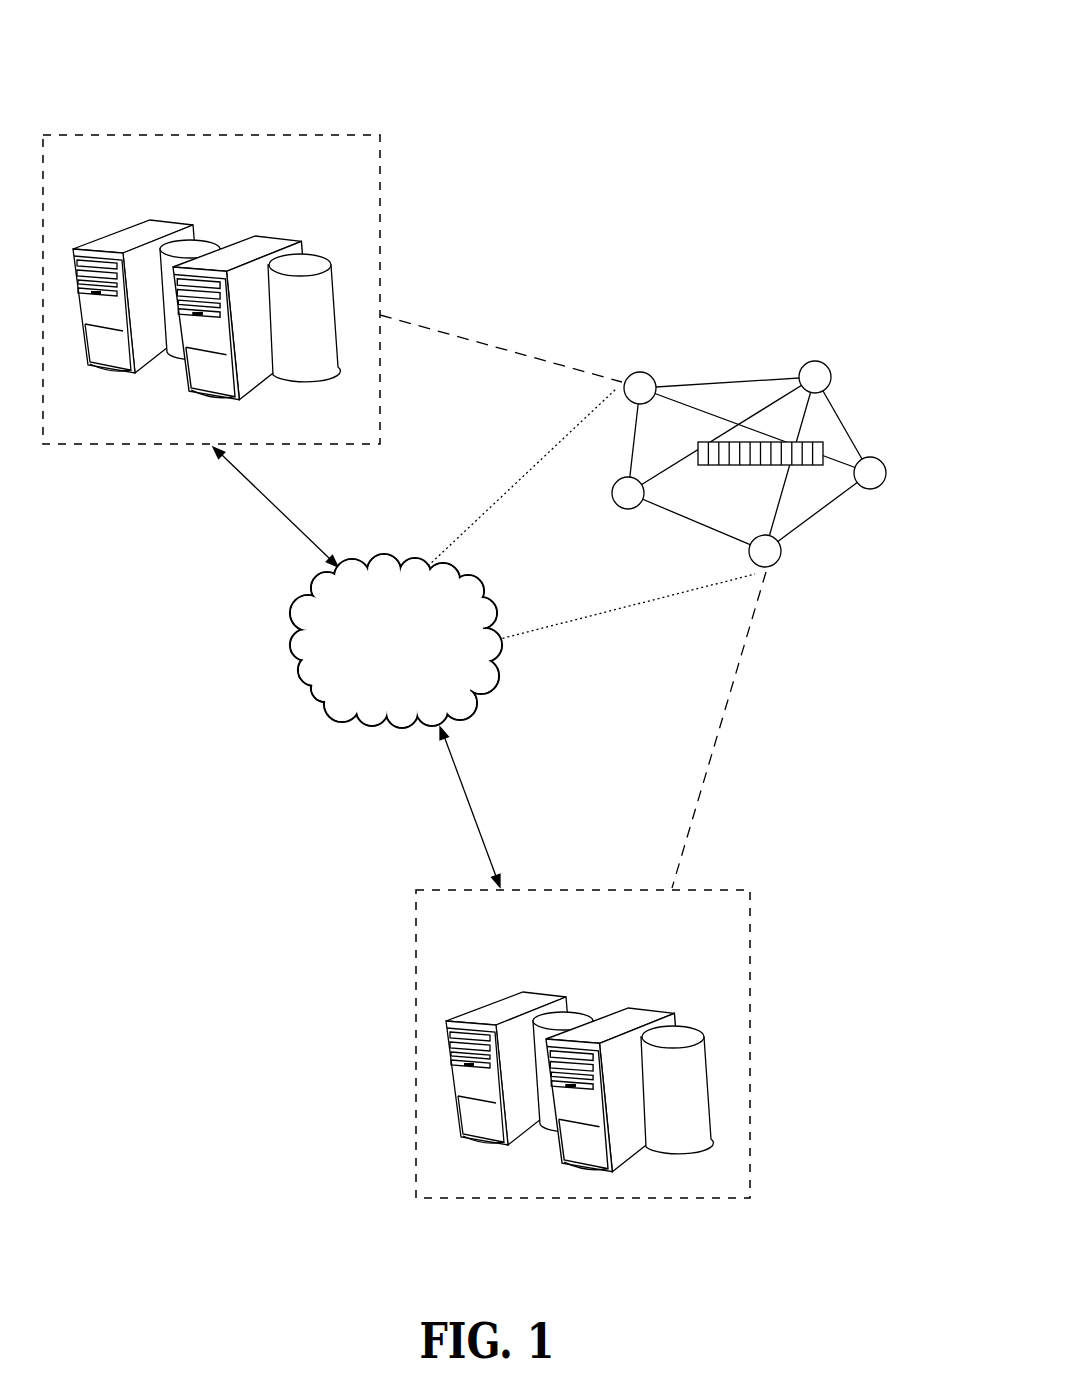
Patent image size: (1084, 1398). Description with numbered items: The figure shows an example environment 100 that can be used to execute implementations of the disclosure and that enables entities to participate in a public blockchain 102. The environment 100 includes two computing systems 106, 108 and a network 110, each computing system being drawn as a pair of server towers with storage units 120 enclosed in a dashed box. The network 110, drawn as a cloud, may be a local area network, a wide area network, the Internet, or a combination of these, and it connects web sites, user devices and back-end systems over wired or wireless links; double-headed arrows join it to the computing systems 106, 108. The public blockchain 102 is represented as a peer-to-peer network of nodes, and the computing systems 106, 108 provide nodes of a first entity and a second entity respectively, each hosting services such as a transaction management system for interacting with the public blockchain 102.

The example environment 100 is at (501, 599).
The public blockchain 102 is at (841, 340).
The computing system 106 is at (380, 218).
The computing system 108 is at (416, 945).
The network 110 is at (300, 673).
The servers 120 is at (252, 209).